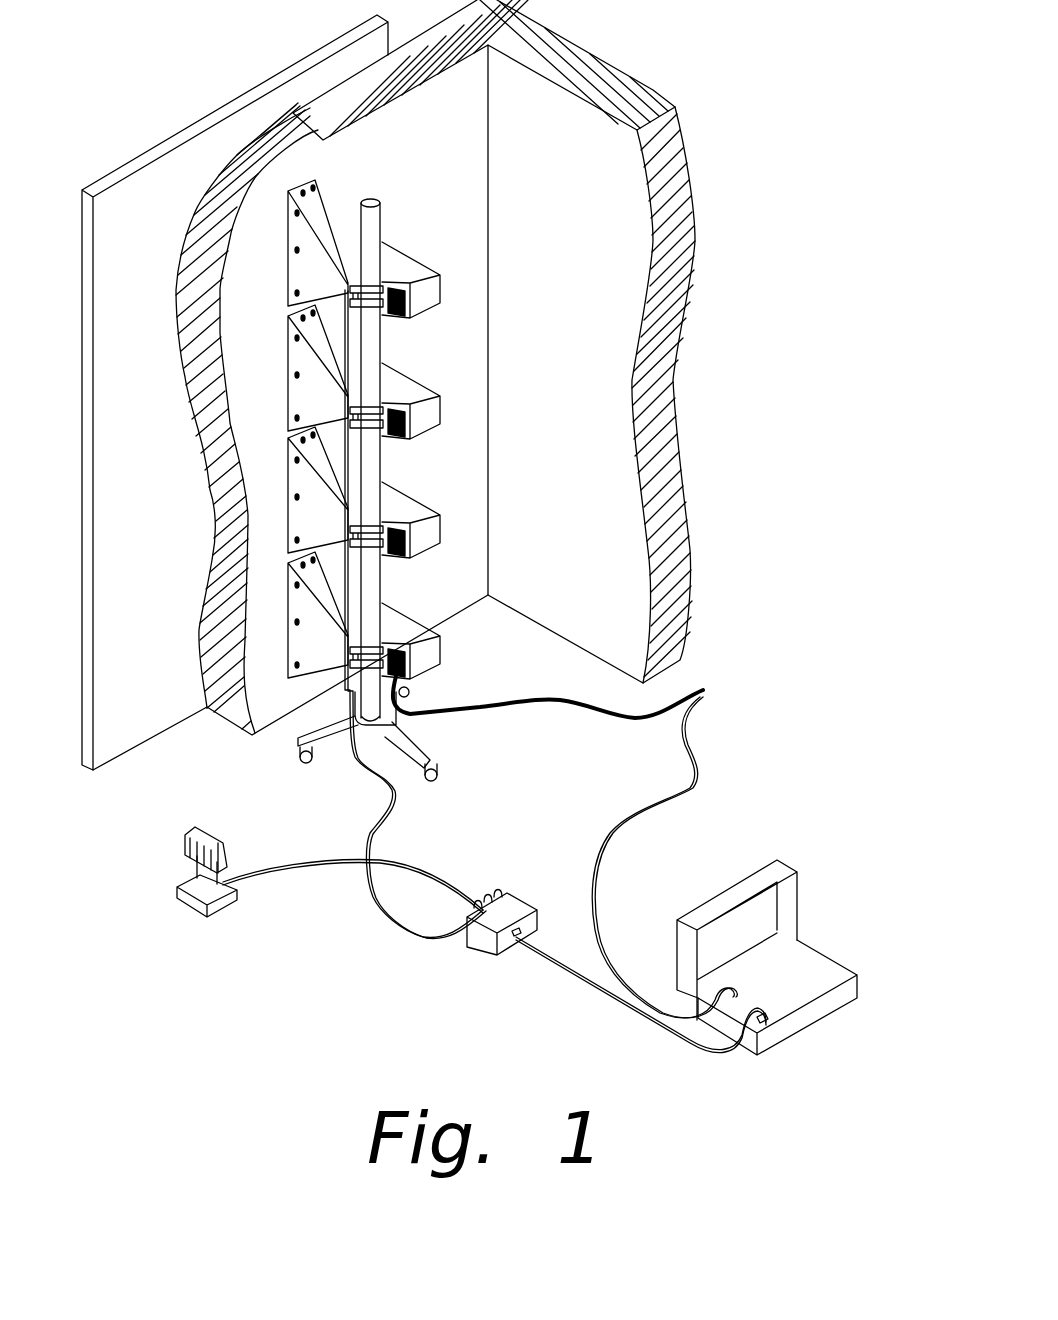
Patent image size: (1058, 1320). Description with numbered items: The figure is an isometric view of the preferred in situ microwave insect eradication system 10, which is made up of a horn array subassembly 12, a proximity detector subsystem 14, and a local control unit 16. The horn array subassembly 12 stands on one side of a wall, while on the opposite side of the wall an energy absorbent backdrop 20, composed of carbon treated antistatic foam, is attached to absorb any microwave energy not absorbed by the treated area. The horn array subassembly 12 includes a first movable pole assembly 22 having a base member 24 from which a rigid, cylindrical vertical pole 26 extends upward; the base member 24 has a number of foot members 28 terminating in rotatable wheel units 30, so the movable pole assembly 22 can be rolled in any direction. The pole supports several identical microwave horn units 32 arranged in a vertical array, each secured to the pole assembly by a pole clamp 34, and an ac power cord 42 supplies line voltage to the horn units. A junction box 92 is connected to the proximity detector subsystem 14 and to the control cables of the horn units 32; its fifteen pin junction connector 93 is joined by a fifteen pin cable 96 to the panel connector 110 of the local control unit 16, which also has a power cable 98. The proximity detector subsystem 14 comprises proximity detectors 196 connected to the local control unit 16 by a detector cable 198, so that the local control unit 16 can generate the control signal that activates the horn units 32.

The in situ microwave insect eradication system 10 is at (758, 600).
The horn array subassembly 12 is at (388, 172).
The proximity detector subsystem 14 is at (154, 915).
The local control unit 16 is at (428, 108).
The energy absorbent backdrop 20 is at (165, 252).
The first movable pole assembly 22 is at (443, 354).
The base member 24 is at (269, 771).
The vertical pole 26 is at (375, 228).
The foot members 28 is at (425, 750).
The rotatable wheel units 30 is at (305, 765).
The microwave horn units 32 is at (423, 293).
The pole clamp 34 is at (350, 296).
The ac power cord 42 is at (630, 722).
The junction box 92 is at (527, 908).
The junction connector 93 is at (510, 948).
The 15 pin cable 96 is at (677, 1033).
The power cable 98 is at (680, 790).
The 15 pin panel connector 110 is at (768, 1023).
The proximity detectors 196 is at (198, 860).
The detector cable 198 is at (324, 865).